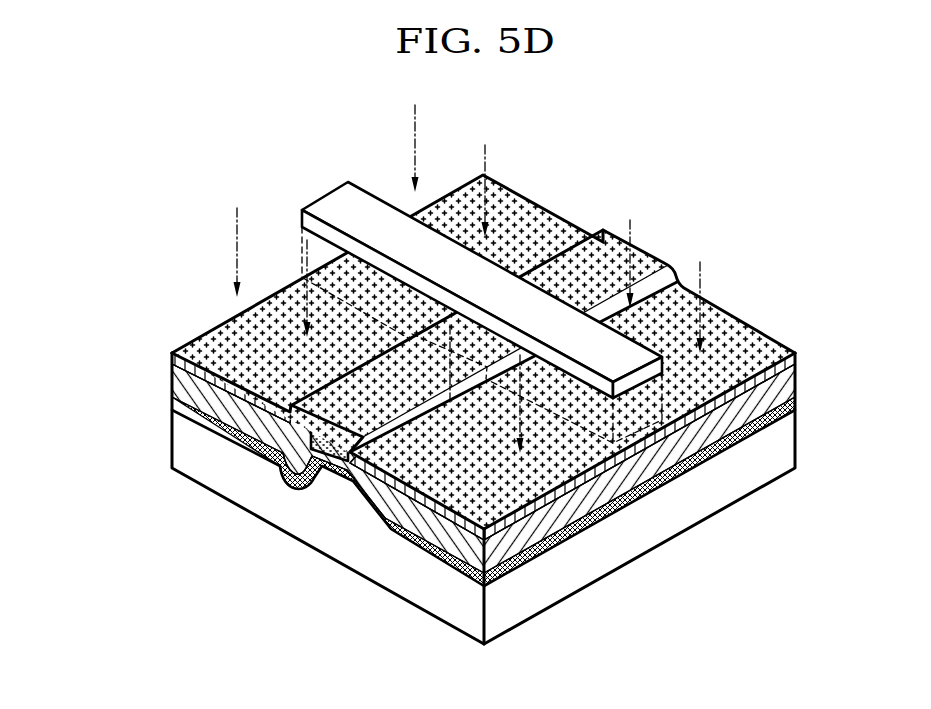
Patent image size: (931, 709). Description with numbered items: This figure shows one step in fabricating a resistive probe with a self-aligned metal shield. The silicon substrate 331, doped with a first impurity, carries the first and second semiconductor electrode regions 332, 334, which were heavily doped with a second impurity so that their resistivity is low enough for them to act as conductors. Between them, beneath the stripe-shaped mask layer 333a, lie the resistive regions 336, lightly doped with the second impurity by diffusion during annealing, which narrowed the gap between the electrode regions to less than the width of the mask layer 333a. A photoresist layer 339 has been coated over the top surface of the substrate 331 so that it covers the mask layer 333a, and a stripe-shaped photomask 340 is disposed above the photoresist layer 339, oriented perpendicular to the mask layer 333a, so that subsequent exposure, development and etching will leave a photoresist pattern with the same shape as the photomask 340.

The silicon substrate 331 is at (370, 570).
The first semiconductor electrode region 332 is at (167, 383).
The stripe-shaped mask layer 333a is at (277, 473).
The second semiconductor electrode region 334 is at (450, 568).
The resistive region 336 is at (330, 490).
The photoresist layer 339 is at (167, 356).
The stripe-shaped photomask 340 is at (330, 205).